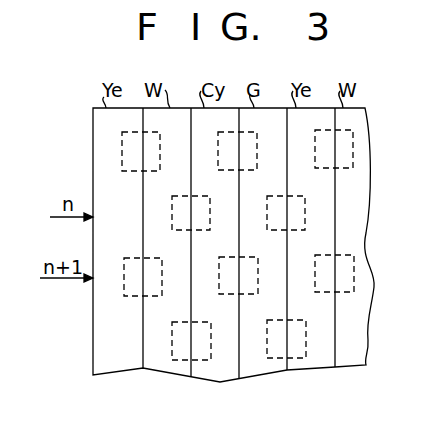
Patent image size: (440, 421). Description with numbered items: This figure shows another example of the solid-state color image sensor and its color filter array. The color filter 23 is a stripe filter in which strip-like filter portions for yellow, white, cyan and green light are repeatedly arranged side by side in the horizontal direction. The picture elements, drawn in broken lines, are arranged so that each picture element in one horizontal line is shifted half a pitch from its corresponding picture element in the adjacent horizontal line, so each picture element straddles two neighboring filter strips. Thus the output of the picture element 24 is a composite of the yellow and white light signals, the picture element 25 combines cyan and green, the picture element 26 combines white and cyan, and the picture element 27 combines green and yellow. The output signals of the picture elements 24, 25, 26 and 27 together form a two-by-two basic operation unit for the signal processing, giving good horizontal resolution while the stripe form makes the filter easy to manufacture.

The color filter 23 is at (93, 134).
The picture element 24 is at (141, 172).
The picture element 25 is at (236, 171).
The picture element 26 is at (170, 212).
The picture element 27 is at (266, 210).